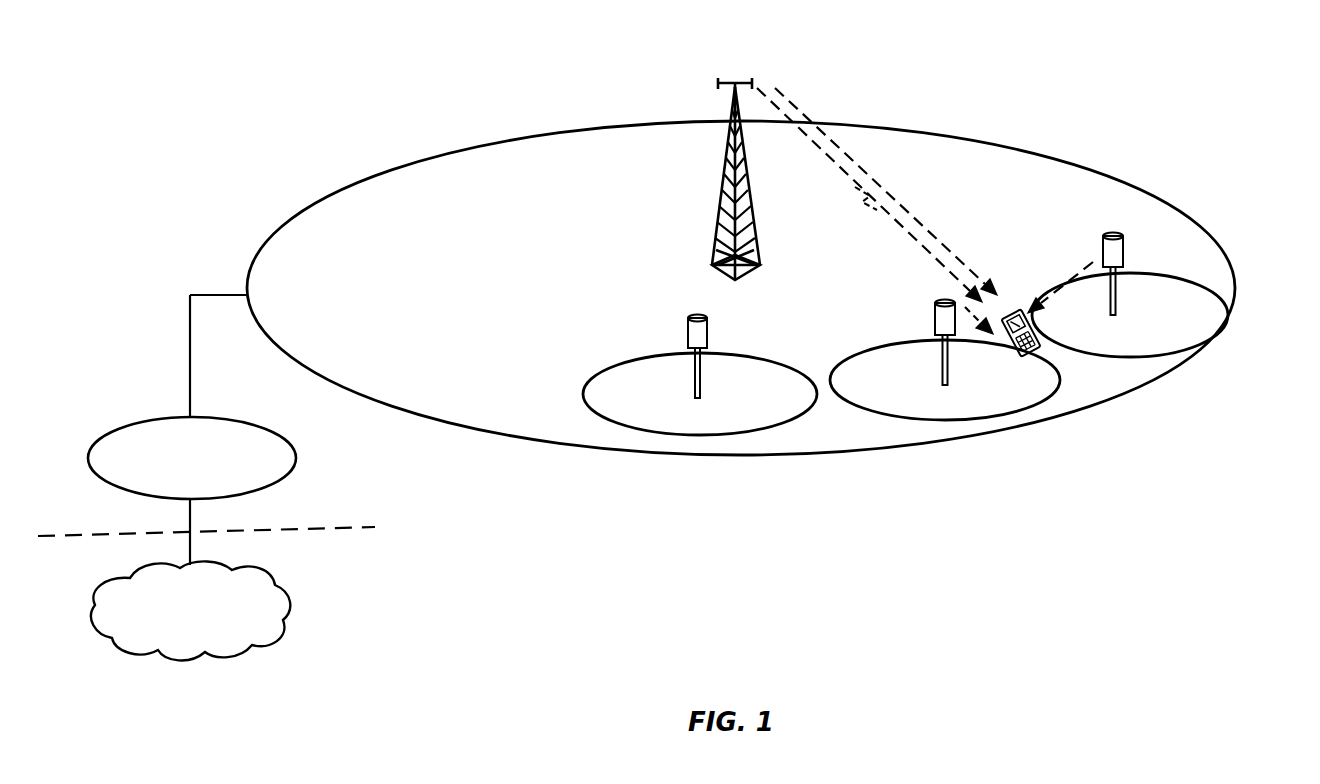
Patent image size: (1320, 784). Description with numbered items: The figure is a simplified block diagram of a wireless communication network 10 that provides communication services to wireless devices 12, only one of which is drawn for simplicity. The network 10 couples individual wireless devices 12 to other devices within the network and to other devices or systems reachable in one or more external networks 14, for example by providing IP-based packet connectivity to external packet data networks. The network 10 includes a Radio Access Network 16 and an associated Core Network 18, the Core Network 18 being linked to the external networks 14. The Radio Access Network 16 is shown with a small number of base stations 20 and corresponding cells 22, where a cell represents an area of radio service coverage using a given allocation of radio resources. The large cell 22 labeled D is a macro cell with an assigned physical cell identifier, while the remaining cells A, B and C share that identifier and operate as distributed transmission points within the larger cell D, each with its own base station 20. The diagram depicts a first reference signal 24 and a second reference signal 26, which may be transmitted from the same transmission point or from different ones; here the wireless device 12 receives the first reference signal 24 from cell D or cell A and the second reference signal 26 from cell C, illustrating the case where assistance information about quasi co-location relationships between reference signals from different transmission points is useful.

The wireless communication network 10 is at (1132, 85).
The wireless device 12 is at (1012, 316).
The external networks 14 is at (206, 593).
The Radio Access Network 16 is at (1248, 101).
The Core Network 18 is at (192, 430).
The base station 20 is at (712, 268).
The cell 22 is at (362, 404).
The first reference signal 24 is at (883, 185).
The second reference signal 26 is at (897, 230).